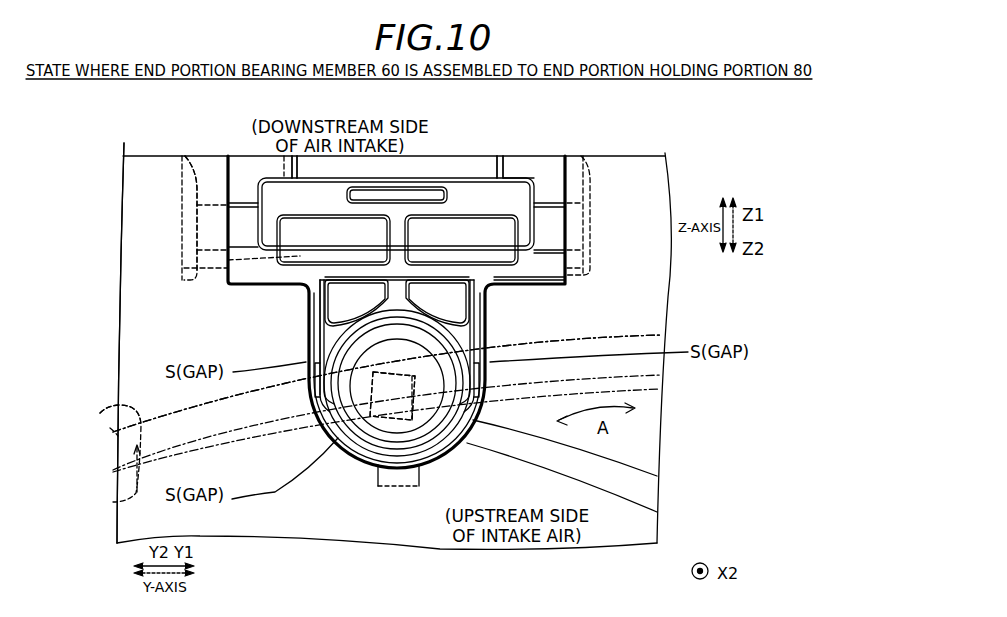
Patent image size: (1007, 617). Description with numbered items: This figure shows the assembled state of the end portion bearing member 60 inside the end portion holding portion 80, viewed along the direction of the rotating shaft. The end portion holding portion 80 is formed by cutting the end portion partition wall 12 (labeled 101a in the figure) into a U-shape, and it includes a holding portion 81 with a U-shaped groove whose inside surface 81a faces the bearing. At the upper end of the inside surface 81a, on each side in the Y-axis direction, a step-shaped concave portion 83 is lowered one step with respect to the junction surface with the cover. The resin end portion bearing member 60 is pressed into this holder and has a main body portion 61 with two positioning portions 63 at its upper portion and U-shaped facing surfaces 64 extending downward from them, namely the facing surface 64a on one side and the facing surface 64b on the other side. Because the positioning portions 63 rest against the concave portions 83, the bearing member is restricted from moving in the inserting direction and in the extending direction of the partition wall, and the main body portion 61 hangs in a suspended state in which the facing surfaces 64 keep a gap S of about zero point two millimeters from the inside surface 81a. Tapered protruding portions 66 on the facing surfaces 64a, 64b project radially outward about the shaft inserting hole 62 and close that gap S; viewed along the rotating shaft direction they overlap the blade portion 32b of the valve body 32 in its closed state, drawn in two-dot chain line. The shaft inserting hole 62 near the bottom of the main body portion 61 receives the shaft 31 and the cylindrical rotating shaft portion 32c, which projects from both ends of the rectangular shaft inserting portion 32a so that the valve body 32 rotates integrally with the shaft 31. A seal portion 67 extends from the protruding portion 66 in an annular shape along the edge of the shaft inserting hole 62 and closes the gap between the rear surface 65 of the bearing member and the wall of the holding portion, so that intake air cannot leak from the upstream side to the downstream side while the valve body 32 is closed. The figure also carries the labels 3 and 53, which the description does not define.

The end portion partition wall 12 is at (165, 172).
The inner wall portion of intake passage 101a is at (120, 343).
The end portion holding portion 80 is at (310, 285).
The holding portion 81 is at (319, 257).
The inside surface 81a is at (310, 343).
The concave portion 83 is at (265, 278).
The end portion bearing member 60 is at (430, 294).
The main body portion 61 is at (521, 165).
The rear surface 65 is at (429, 318).
The positioning portions 63 is at (330, 293).
The facing surfaces 64 is at (405, 275).
The facing surface 64a is at (510, 332).
The facing surface 64b is at (335, 327).
The rib pocket 53 is at (565, 303).
The protruding portions 66 is at (305, 388).
The seal portion 67 is at (657, 476).
The shaft inserting hole 62 is at (657, 512).
The valve body 32 is at (355, 474).
The valve 3 is at (387, 383).
The shaft inserting portion 32a is at (418, 467).
The blade portion 32b is at (100, 413).
The rotating shaft portion 32c is at (396, 467).
The shaft 31 is at (392, 425).